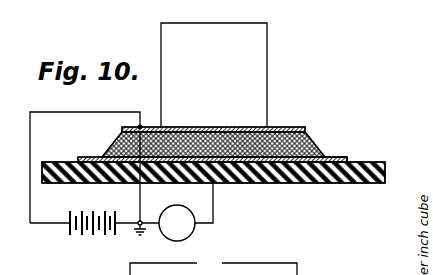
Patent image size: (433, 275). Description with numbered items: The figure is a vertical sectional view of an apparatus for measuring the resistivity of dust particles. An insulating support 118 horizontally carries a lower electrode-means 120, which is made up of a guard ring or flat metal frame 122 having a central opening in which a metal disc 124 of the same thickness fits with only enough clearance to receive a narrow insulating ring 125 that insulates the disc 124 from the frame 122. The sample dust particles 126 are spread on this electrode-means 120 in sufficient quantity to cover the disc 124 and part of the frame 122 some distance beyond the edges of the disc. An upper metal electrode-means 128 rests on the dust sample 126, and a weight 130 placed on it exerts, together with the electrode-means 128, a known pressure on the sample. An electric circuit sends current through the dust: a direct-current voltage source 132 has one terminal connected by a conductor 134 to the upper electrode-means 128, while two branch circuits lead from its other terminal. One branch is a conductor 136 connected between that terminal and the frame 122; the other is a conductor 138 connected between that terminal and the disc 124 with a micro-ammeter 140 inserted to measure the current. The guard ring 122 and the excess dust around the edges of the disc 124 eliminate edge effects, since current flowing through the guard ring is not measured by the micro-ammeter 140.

The insulating support 118 is at (330, 183).
The electrode-means 120 is at (400, 150).
The guard ring or flat metal frame 122 is at (327, 158).
The metal disc 124 is at (228, 184).
The insulating ring 125 is at (276, 184).
The dust particles 126 is at (113, 143).
The upper electrode-means 128 is at (290, 127).
The weight 130 is at (261, 71).
The direct-current voltage source 132 is at (92, 236).
The conductor 134 is at (66, 113).
The conductor 136 is at (138, 199).
The conductor 138 is at (217, 236).
The micro-ammeter 140 is at (197, 204).